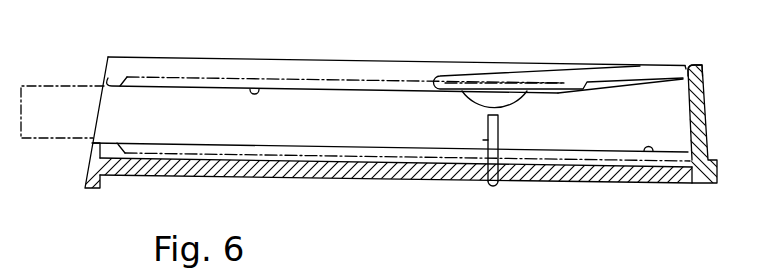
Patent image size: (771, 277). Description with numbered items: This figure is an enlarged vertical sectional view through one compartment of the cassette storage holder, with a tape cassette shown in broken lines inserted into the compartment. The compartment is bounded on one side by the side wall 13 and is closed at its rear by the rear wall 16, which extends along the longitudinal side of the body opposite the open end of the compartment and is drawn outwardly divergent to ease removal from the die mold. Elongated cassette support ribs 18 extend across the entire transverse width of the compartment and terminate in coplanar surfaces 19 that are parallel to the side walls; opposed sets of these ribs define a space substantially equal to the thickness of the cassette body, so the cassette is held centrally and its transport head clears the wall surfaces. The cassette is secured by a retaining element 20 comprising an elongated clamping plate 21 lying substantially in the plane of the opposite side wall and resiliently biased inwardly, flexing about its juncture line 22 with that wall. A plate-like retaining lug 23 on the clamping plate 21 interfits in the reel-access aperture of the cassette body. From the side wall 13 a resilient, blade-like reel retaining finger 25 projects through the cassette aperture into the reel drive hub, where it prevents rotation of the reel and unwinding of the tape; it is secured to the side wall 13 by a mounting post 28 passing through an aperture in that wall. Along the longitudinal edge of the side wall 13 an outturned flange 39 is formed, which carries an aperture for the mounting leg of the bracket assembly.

The side wall 13 is at (348, 174).
The rear wall 16 is at (700, 118).
The cassette support rib 18 is at (200, 67).
The surface 19 is at (260, 97).
The retaining element 20 is at (485, 58).
The clamping plate 21 is at (615, 75).
The juncture line 22 is at (681, 64).
The retaining lug 23 is at (497, 100).
The reel retaining finger 25 is at (482, 150).
The mounting post 28 is at (498, 184).
The outturned flange 39 is at (85, 186).